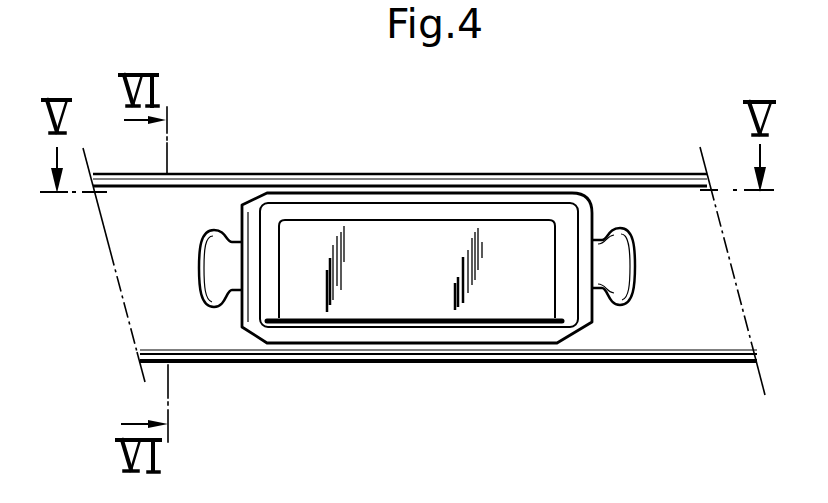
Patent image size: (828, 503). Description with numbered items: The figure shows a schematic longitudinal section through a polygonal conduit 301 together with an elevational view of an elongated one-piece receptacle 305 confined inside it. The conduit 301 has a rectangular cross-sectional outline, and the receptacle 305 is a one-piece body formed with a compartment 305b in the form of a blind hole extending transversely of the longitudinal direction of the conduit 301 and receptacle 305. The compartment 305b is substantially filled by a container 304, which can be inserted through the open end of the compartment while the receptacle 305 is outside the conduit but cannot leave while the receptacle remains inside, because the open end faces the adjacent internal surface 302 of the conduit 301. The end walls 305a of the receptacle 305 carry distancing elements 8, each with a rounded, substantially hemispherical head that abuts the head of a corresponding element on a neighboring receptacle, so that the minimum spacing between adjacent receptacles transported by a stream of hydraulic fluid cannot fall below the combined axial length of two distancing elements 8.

The conduit 301 is at (236, 166).
The internal surface 302 is at (667, 205).
The container 304 is at (436, 245).
The receptacle 305 is at (347, 176).
The end walls 305a is at (248, 225).
The compartment 305b is at (565, 220).
The distancing element 8 is at (612, 248).